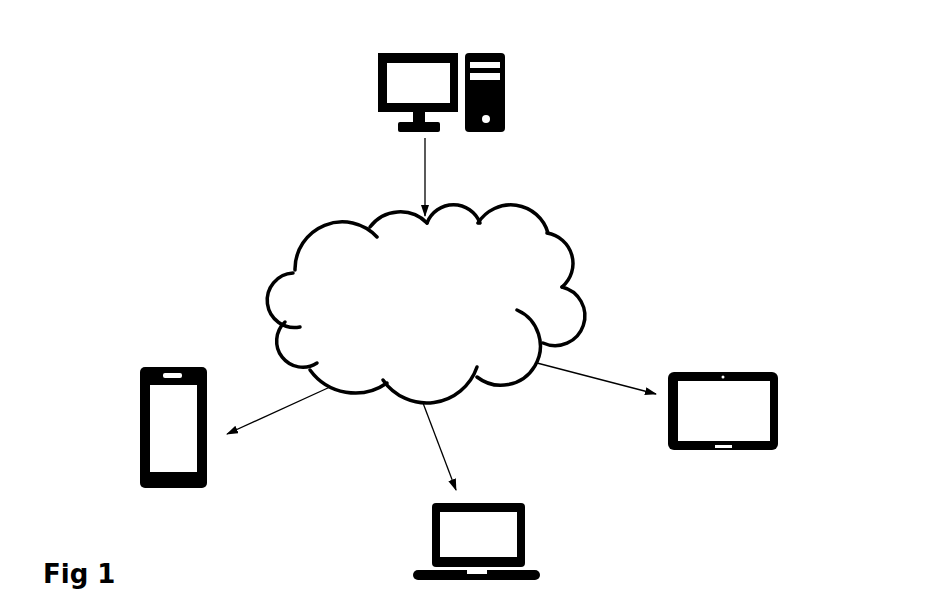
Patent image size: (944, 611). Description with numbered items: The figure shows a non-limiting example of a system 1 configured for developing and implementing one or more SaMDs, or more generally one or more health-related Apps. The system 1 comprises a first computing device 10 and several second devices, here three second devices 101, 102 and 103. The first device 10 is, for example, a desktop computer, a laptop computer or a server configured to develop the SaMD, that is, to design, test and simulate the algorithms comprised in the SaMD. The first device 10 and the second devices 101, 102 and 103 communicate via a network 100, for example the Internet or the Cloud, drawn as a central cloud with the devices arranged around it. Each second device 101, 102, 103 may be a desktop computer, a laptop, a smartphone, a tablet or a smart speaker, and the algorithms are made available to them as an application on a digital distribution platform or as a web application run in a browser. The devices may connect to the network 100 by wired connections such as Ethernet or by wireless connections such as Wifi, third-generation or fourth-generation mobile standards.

The system 1 is at (244, 168).
The first computing device 10 is at (527, 97).
The network 100 is at (557, 252).
The second device 101 is at (175, 365).
The second device 102 is at (413, 573).
The second device 103 is at (740, 372).